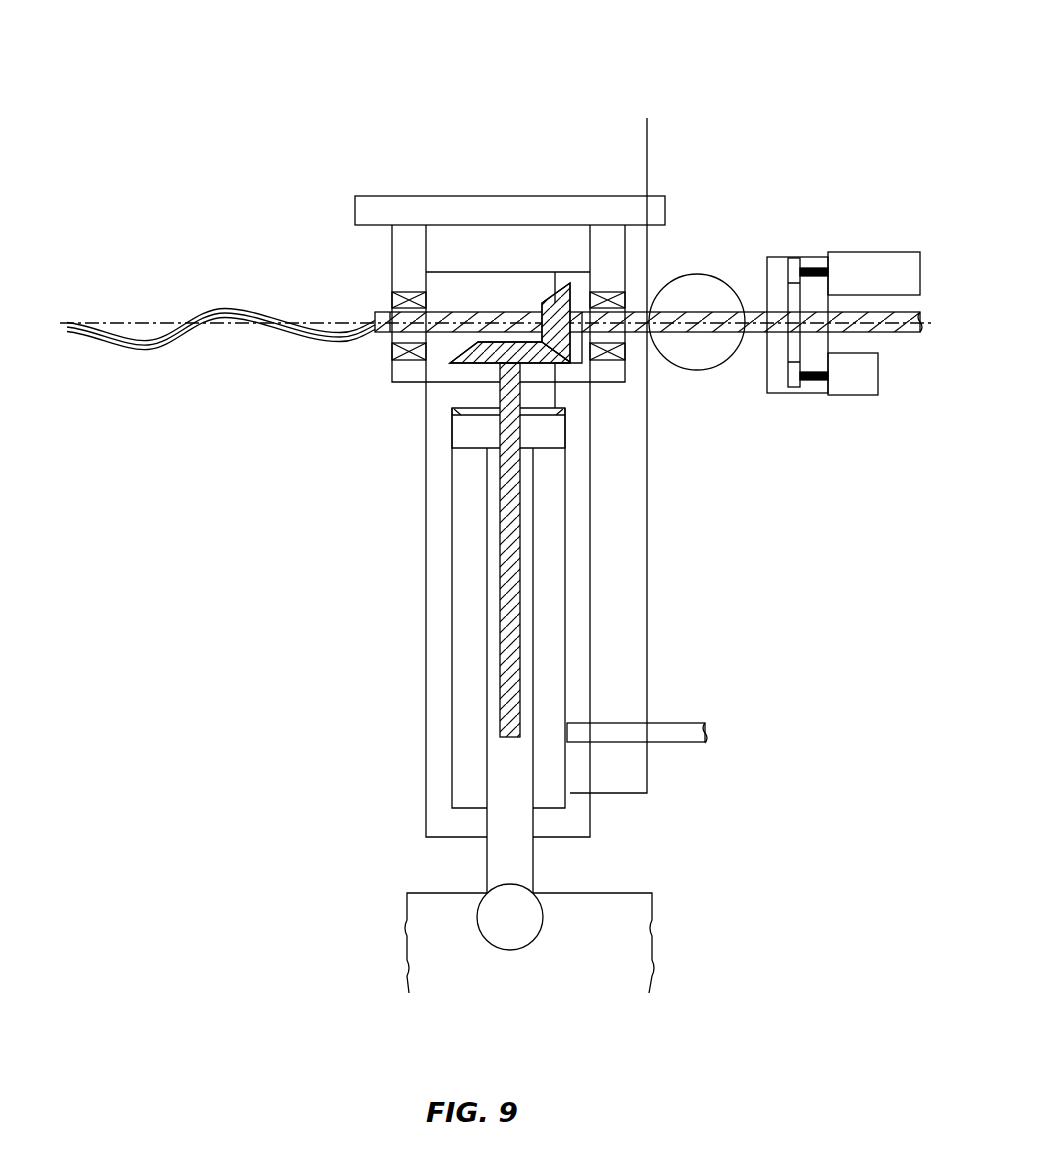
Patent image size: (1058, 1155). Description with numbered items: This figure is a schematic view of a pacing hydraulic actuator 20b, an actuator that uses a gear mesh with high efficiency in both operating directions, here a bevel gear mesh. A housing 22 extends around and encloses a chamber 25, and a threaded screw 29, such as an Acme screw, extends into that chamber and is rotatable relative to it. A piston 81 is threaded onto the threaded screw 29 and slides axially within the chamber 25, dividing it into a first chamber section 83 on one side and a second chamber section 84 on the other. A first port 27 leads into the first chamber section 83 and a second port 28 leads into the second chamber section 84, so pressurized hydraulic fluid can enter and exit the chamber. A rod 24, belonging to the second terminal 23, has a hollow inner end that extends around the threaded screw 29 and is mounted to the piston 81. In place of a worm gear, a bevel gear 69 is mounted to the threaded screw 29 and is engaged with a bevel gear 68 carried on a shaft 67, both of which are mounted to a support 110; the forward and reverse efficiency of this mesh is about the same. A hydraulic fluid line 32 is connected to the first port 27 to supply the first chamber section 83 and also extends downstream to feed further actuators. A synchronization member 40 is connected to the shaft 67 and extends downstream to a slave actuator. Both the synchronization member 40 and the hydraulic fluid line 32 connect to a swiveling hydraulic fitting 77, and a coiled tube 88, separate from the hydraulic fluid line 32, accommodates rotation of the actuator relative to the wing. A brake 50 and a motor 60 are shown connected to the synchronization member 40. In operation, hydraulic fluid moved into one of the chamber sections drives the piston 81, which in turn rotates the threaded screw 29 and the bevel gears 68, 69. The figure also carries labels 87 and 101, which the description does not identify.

The pacing hydraulic actuator 20b is at (659, 84).
The support 110 is at (416, 203).
The swiveling hydraulic fitting 77 is at (650, 348).
The first port 27 is at (613, 312).
The shaft 67 is at (492, 312).
The coiled tube 88 is at (697, 274).
The brake 50 is at (877, 252).
The motor 60 is at (853, 395).
The synchronization member 40 is at (130, 348).
The hydraulic fluid line 32 is at (325, 340).
The second port 28 is at (575, 727).
The bearings 87 is at (395, 298).
The bevel gear 69 is at (477, 356).
The bevel gear 68 is at (552, 303).
The threaded screw 29 is at (512, 597).
The first chamber section 83 is at (468, 413).
The piston 81 is at (533, 427).
The second chamber section 84 is at (472, 482).
The chamber 25 is at (468, 608).
The housing 22 is at (440, 648).
The rod 24 is at (520, 872).
The second terminal 23 is at (523, 930).
The base structure 101 is at (432, 945).